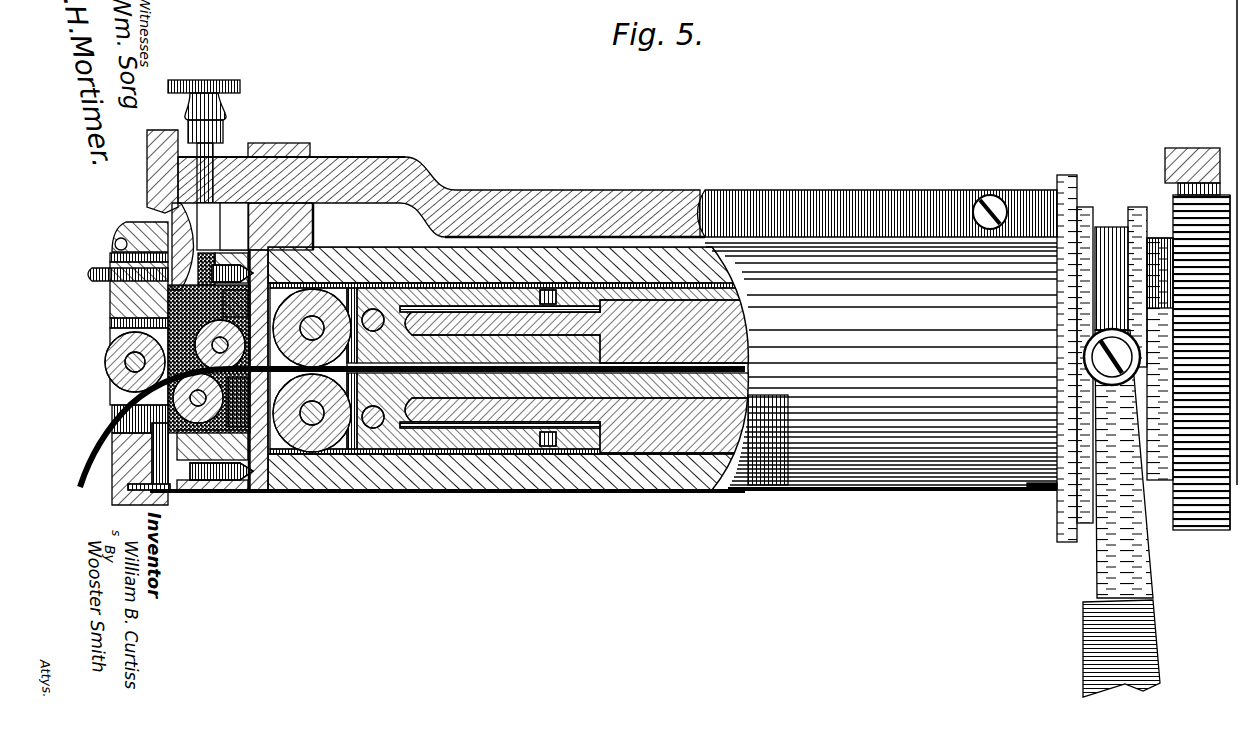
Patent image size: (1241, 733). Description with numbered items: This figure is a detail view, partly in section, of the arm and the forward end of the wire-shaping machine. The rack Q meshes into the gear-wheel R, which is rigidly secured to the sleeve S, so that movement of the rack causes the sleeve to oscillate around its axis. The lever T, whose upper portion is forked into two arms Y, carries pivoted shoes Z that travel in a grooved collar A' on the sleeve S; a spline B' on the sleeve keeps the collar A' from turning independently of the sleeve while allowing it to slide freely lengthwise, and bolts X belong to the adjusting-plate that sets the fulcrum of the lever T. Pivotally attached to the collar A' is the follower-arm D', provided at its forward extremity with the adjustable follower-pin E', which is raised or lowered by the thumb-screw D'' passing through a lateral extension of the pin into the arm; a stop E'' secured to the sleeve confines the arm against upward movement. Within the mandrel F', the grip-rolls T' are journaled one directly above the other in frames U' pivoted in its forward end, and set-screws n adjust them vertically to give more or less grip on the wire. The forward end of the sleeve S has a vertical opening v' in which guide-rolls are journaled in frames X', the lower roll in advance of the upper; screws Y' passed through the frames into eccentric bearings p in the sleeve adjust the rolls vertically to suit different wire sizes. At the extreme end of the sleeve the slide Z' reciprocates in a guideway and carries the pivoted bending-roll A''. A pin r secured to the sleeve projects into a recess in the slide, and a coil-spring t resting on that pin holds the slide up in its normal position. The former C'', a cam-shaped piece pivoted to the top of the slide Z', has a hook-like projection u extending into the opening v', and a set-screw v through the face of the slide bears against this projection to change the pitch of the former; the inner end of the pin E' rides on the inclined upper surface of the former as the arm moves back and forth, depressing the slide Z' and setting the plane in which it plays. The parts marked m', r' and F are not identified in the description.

The thumb-screw D'' is at (232, 129).
The follower-pin E' is at (139, 171).
The stop E'' is at (310, 178).
The follower-arm D' is at (441, 188).
The former C'' is at (138, 246).
The set-screw v is at (109, 275).
The hook-like projection u is at (110, 300).
The roll-frames X' is at (130, 438).
The bending-roll A'' is at (145, 371).
The bearings p is at (254, 276).
The end wall m' is at (254, 397).
The coil-spring t is at (150, 460).
The slide Z' is at (406, 441).
The pin r is at (156, 514).
The pin r' is at (234, 226).
The vertical opening v' is at (222, 226).
The screws Y' is at (308, 336).
The mandrel F' is at (465, 379).
The grip-rolls T' is at (328, 381).
The frames U' is at (399, 383).
The set-screws n is at (548, 298).
The sleeve F is at (878, 188).
The sleeve S is at (881, 366).
The shoes Z is at (1062, 280).
The grooved collar A' is at (1078, 329).
The spline B' is at (1007, 507).
The bolts X is at (1085, 463).
The arms Y is at (719, 427).
The lever T is at (1102, 648).
The gear-wheel R is at (1178, 228).
The rack Q is at (1190, 148).